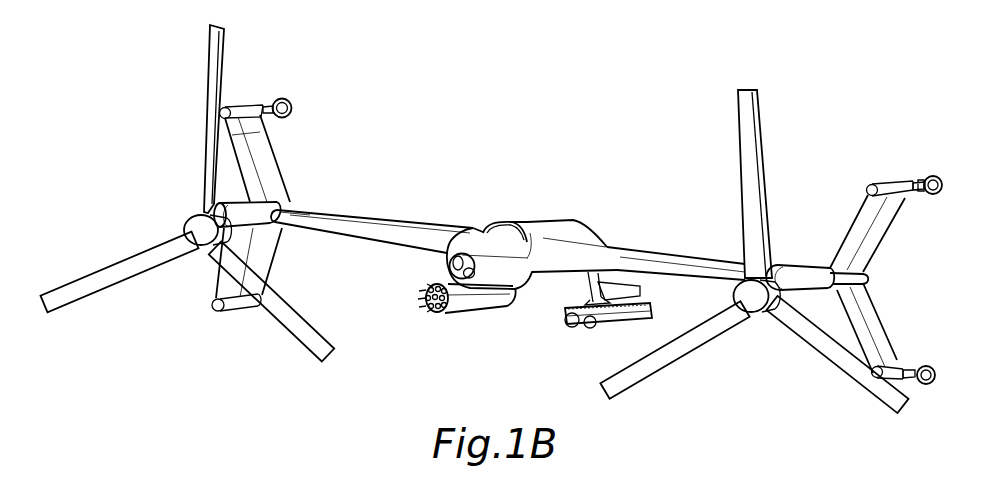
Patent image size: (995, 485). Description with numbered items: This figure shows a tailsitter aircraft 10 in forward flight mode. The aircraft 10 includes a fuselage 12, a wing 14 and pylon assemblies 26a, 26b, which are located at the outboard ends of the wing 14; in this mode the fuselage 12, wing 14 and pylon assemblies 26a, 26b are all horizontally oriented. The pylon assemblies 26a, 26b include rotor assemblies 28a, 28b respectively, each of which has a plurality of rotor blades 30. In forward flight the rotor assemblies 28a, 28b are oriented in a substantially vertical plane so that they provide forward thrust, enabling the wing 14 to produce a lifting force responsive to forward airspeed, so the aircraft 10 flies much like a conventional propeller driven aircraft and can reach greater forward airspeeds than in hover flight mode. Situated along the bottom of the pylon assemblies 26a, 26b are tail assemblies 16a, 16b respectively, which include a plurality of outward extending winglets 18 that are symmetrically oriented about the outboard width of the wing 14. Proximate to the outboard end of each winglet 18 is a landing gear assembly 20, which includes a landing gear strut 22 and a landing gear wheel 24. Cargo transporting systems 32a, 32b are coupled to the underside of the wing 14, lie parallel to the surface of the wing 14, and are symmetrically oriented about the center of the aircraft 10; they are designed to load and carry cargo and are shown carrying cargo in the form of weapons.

The tailsitter aircraft 10 is at (604, 172).
The fuselage 12 is at (545, 230).
The wing 14 is at (420, 228).
The tail assembly 16a is at (300, 203).
The tail assembly 16b is at (867, 278).
The winglet 18 is at (260, 146).
The landing gear assembly 20 is at (887, 186).
The landing gear strut 22 is at (912, 180).
The landing gear wheel 24 is at (935, 177).
The pylon assembly 26a is at (256, 208).
The pylon assembly 26b is at (797, 268).
The rotor assembly 28a is at (203, 62).
The rotor assembly 28b is at (770, 111).
The rotor blade 30 is at (208, 115).
The cargo transporting system 32a is at (461, 312).
The cargo transporting system 32b is at (577, 330).